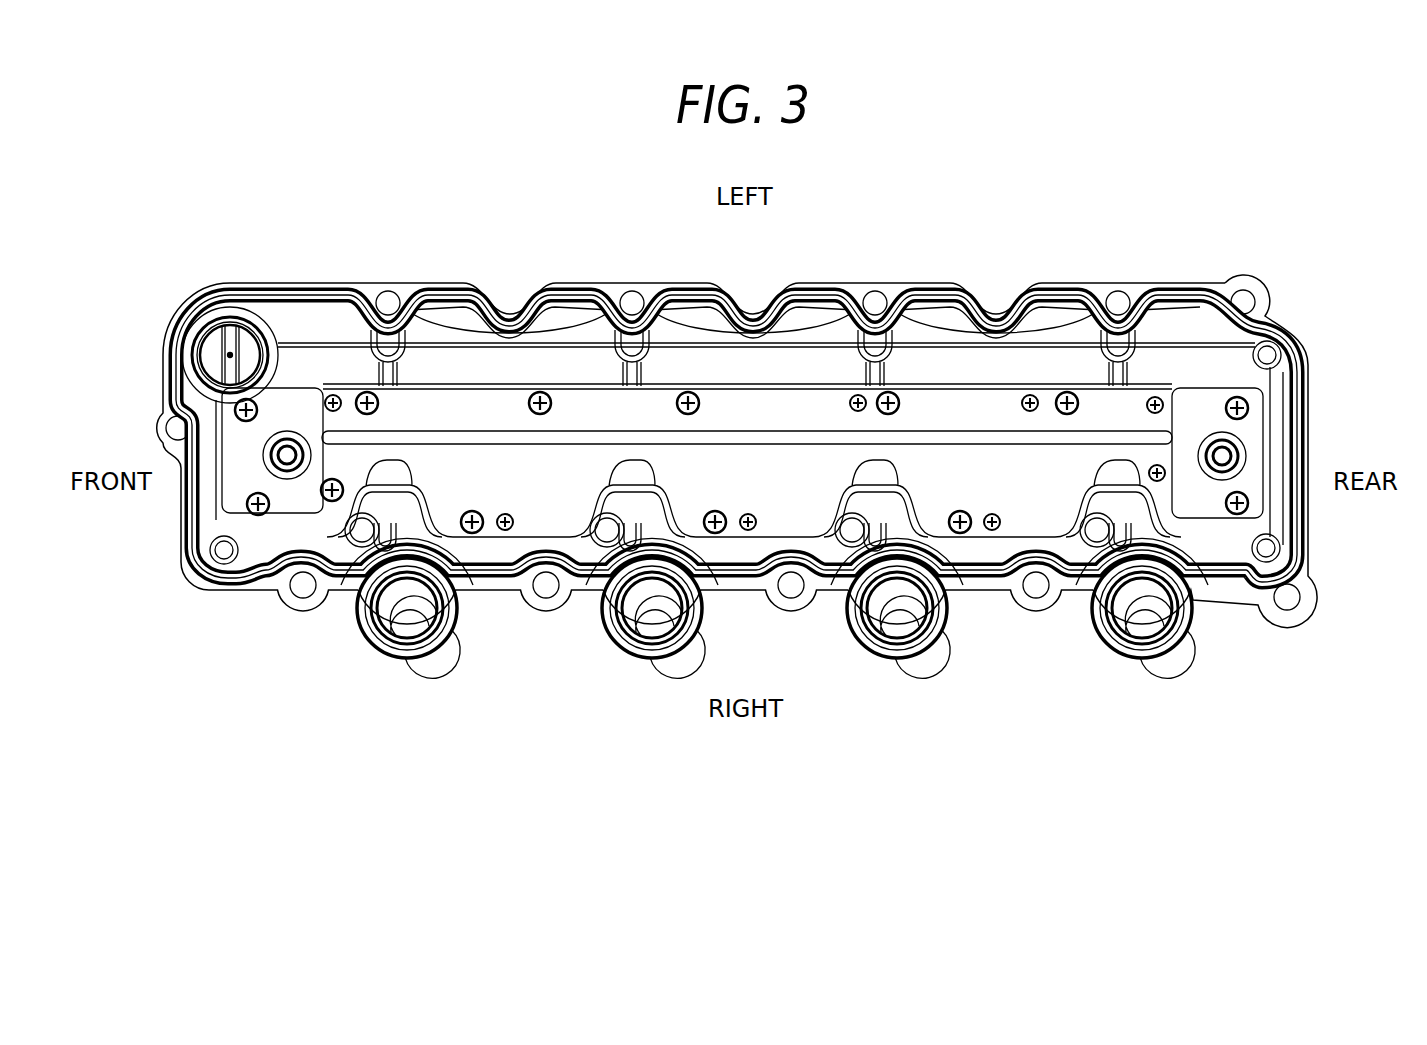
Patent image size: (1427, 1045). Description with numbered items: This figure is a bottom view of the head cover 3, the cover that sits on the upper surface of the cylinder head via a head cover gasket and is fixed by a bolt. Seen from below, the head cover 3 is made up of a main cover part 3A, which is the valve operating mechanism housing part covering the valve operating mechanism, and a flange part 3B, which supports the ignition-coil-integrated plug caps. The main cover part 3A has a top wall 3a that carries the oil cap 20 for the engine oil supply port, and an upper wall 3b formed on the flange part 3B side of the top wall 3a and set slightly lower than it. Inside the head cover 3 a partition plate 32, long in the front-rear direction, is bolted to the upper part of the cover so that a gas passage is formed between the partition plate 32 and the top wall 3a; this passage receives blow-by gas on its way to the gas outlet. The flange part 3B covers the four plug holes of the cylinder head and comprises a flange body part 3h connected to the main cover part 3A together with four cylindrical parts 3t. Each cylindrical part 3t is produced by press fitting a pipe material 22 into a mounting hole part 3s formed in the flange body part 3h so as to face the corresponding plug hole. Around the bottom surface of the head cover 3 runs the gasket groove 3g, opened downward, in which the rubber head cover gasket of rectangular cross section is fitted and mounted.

The head cover 3 is at (252, 262).
The gasket groove 3g is at (312, 290).
The top wall 3a is at (591, 415).
The upper wall 3b is at (428, 508).
The partition plate 32 is at (797, 422).
The main cover part 3A is at (1150, 289).
The flange part 3B is at (355, 625).
The oil cap 20 is at (208, 357).
The mounting hole part 3s is at (395, 656).
The cylindrical part 3t is at (788, 682).
The pipe material 22 is at (433, 670).
The flange body part 3h is at (462, 632).